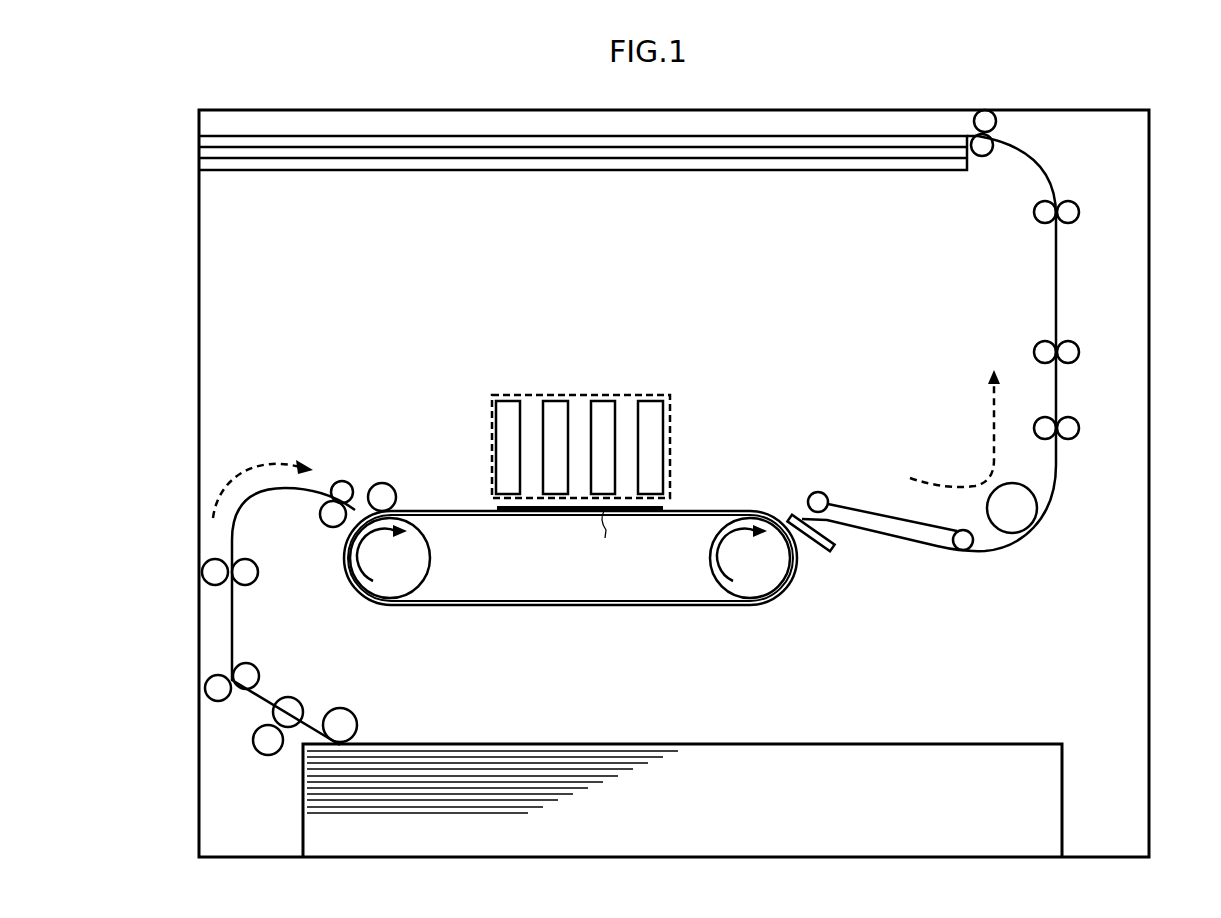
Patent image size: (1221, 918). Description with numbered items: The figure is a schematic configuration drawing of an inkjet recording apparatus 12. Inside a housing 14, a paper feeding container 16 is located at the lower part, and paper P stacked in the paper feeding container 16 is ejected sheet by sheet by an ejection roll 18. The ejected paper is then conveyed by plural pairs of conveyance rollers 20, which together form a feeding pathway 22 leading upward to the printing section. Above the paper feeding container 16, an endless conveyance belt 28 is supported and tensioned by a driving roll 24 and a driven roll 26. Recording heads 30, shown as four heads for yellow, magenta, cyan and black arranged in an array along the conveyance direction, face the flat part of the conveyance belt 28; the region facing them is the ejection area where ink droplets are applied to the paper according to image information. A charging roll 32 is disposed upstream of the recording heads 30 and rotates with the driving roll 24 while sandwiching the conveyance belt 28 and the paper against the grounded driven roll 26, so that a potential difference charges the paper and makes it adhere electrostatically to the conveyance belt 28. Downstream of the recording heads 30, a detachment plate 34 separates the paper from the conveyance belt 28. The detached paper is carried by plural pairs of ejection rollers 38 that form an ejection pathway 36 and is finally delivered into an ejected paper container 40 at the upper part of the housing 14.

The inkjet recording apparatus 12 is at (988, 93).
The housing 14 is at (1150, 348).
The paper feeding container 16 is at (1065, 792).
The ejection roll 18 is at (358, 720).
The pairs of conveyance rollers 20 is at (336, 501).
The feeding pathway 22 is at (230, 620).
The driving roll 24 is at (708, 568).
The driven roll 26 is at (430, 563).
The conveyance belt 28 is at (646, 605).
The recording heads 30 is at (652, 400).
The charging roll 32 is at (386, 482).
The detachment plate 34 is at (818, 552).
The ejection pathway 36 is at (1057, 268).
The pairs of ejection rollers 38 is at (992, 152).
The ejected paper container 40 is at (918, 172).